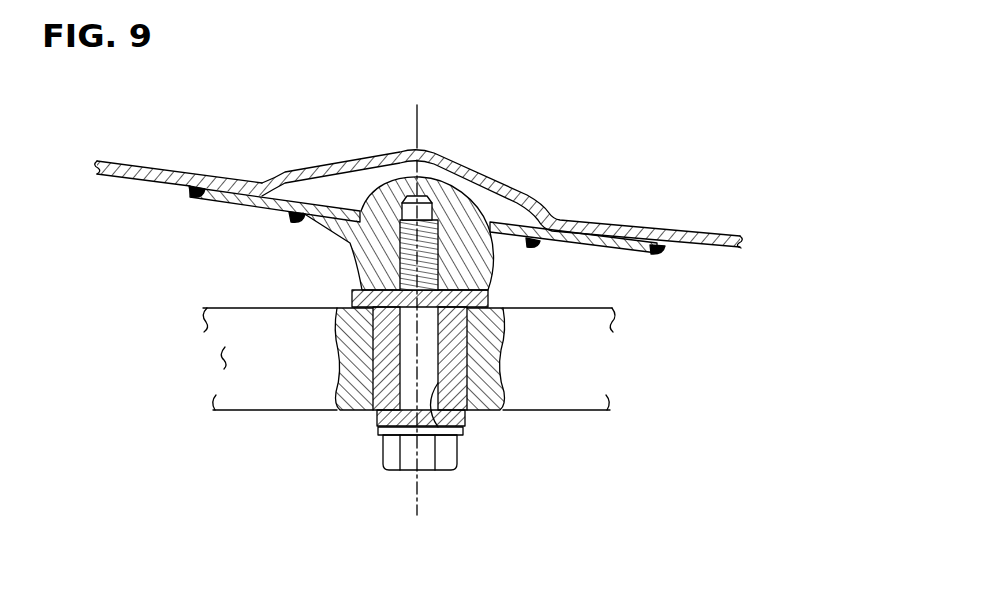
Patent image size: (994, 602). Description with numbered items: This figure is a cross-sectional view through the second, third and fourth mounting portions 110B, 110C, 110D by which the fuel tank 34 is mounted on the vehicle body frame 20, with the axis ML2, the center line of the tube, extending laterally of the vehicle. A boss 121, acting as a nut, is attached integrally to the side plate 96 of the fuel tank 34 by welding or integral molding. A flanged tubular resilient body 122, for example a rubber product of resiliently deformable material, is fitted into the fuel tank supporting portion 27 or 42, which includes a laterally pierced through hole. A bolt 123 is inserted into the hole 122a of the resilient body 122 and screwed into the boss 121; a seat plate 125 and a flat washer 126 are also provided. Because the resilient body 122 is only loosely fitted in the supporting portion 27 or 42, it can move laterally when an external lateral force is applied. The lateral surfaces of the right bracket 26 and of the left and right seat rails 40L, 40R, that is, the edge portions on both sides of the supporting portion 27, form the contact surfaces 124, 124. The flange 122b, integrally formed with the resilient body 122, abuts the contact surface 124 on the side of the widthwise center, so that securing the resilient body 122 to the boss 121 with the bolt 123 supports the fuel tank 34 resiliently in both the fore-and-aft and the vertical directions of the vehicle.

The vehicle body frame 20 is at (202, 342).
The right bracket 26 is at (326, 388).
The left seat rail 40L is at (326, 388).
The right seat rail 40R is at (222, 358).
The fuel tank supporting portion 27 is at (303, 421).
The fuel tank supporting portion 42 is at (380, 347).
The fuel tank 34 is at (108, 181).
The side plate 96 is at (158, 180).
The second mounting portion 110B is at (683, 150).
The third mounting portion 110C is at (683, 150).
The fourth mounting portion 110D is at (746, 208).
The boss 121 is at (357, 243).
The resilient body 122 is at (523, 401).
The hole 122a is at (457, 438).
The flange 122b is at (488, 300).
The bolt 123 is at (433, 471).
The contact surface 124 is at (233, 303).
The seat plate 125 is at (241, 200).
The flat washer 126 is at (467, 417).
The axis ML2 is at (413, 497).